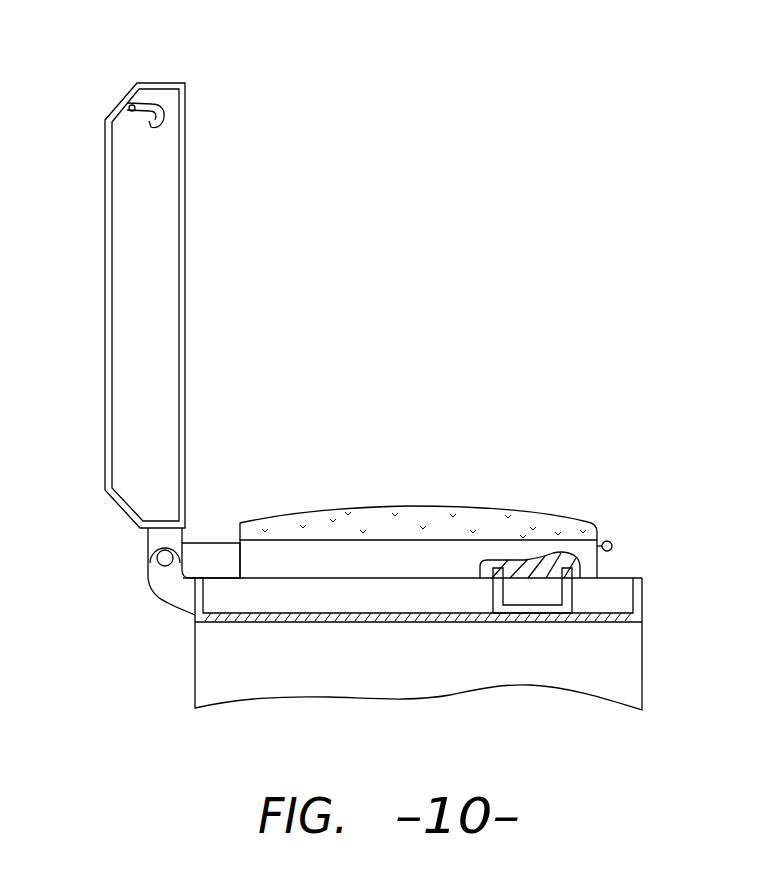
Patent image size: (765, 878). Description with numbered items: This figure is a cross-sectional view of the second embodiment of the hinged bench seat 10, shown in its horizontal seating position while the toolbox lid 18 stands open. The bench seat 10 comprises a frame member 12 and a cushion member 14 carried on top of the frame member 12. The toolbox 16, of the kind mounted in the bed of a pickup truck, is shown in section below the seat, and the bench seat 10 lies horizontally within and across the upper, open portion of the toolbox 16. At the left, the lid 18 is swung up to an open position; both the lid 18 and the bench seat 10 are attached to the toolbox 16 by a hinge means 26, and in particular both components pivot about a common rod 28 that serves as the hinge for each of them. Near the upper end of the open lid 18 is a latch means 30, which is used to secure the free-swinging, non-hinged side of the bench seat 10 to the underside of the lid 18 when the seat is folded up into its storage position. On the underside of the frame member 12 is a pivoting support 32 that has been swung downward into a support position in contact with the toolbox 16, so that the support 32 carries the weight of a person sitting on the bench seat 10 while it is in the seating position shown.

The bench seat 10 is at (552, 513).
The frame member 12 is at (460, 553).
The cushion member 14 is at (387, 517).
The toolbox 16 is at (642, 658).
The lid 18 is at (123, 103).
The hinge means 26 is at (212, 555).
The common rod 28 is at (167, 556).
The latch means 30 is at (158, 100).
The pivoting supports 32 is at (573, 595).